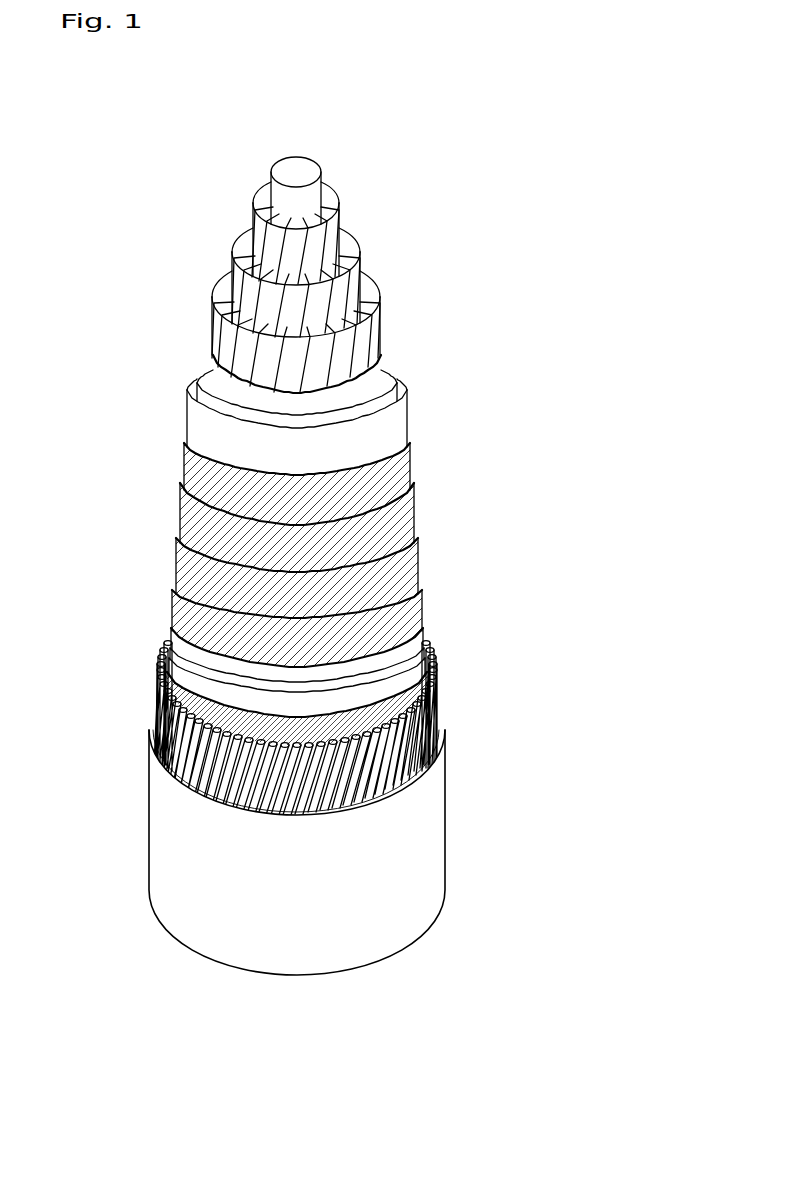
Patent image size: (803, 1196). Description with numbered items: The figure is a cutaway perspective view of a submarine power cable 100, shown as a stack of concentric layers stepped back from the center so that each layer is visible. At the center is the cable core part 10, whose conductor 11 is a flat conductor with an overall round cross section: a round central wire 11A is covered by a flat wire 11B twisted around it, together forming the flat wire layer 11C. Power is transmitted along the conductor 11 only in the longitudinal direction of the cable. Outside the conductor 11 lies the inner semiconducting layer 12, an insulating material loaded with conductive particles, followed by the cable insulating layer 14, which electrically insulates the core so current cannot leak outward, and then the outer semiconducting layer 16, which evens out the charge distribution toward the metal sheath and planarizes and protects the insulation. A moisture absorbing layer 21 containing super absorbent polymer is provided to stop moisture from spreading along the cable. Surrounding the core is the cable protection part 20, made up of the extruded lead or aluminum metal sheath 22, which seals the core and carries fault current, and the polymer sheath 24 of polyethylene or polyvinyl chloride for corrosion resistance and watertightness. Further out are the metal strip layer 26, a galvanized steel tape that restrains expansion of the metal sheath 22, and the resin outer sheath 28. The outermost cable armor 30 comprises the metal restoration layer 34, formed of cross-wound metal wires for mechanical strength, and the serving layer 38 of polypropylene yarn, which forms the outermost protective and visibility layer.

The submarine power cable 100 is at (577, 168).
The cable core part 10 is at (503, 108).
The conductor 11 is at (428, 152).
The round central wire 11A is at (324, 185).
The flat wire 11B is at (341, 247).
The flat wire layer 11C is at (208, 328).
The inner semiconducting layer 12 is at (370, 381).
The cable insulating layer 14 is at (392, 421).
The outer semiconducting layer 16 is at (394, 463).
The cable protection part 20 is at (503, 512).
The moisture absorbing layer 21 is at (400, 517).
The metal sheath 22 is at (400, 560).
The polymer sheath 24 is at (400, 610).
The metal strip layer 26 is at (400, 655).
The outer sheath 28 is at (405, 704).
The cable armor 30 is at (503, 742).
The metal restoration layer 34 is at (388, 757).
The serving layer 38 is at (393, 822).